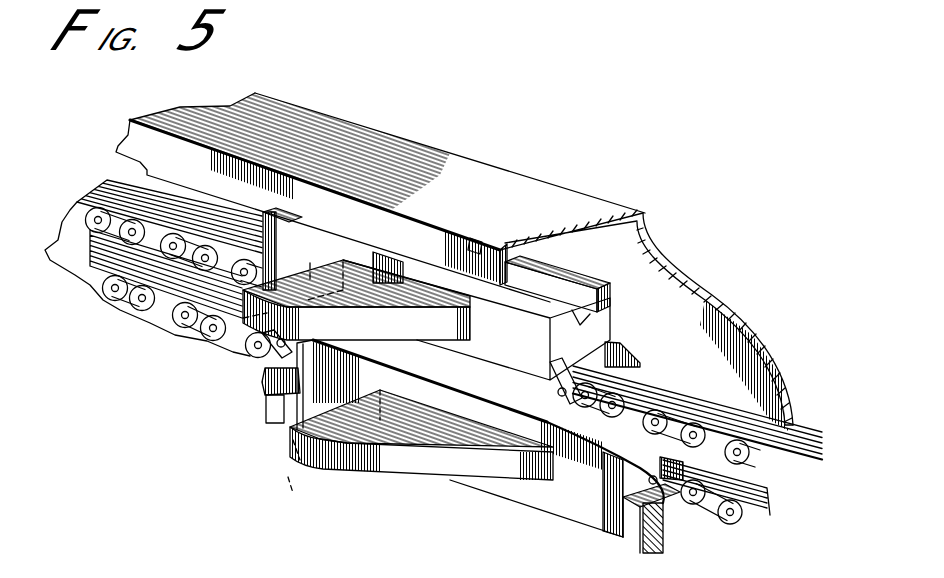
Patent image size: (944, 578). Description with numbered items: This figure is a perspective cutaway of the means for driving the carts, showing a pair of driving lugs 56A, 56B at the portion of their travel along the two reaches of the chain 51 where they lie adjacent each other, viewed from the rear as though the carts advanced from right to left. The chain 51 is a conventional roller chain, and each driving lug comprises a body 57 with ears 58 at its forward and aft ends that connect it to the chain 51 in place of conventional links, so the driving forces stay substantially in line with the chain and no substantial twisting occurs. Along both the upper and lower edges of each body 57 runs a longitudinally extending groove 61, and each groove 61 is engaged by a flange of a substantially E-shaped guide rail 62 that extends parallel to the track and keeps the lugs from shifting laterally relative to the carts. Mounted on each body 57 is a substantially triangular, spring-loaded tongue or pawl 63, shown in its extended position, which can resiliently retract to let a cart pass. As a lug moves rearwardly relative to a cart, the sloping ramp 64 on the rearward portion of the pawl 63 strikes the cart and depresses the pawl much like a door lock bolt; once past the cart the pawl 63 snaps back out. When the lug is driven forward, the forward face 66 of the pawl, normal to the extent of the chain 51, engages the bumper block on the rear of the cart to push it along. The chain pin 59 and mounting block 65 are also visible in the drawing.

The chain 51 is at (48, 250).
The driving lug 56A is at (334, 226).
The driving lug 56B is at (290, 404).
The body 57 is at (613, 310).
The ears 58 is at (267, 380).
The chain pin 59 is at (270, 350).
The groove 61 is at (550, 277).
The guide rail 62 is at (147, 178).
The pawl 63 is at (404, 262).
The sloping ramp 64 is at (453, 323).
The mounting block 65 is at (473, 240).
The forward face 66 is at (312, 258).